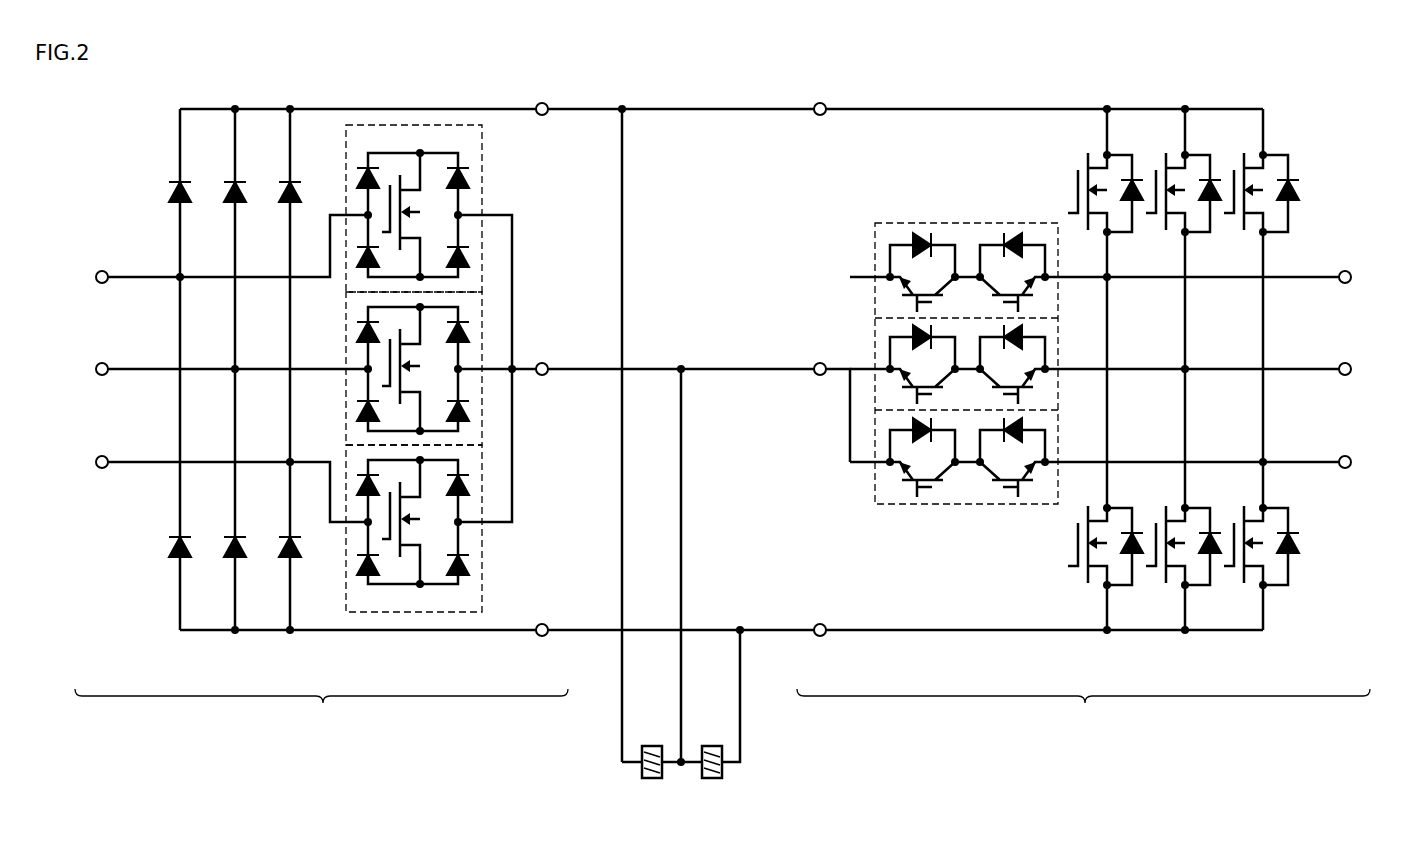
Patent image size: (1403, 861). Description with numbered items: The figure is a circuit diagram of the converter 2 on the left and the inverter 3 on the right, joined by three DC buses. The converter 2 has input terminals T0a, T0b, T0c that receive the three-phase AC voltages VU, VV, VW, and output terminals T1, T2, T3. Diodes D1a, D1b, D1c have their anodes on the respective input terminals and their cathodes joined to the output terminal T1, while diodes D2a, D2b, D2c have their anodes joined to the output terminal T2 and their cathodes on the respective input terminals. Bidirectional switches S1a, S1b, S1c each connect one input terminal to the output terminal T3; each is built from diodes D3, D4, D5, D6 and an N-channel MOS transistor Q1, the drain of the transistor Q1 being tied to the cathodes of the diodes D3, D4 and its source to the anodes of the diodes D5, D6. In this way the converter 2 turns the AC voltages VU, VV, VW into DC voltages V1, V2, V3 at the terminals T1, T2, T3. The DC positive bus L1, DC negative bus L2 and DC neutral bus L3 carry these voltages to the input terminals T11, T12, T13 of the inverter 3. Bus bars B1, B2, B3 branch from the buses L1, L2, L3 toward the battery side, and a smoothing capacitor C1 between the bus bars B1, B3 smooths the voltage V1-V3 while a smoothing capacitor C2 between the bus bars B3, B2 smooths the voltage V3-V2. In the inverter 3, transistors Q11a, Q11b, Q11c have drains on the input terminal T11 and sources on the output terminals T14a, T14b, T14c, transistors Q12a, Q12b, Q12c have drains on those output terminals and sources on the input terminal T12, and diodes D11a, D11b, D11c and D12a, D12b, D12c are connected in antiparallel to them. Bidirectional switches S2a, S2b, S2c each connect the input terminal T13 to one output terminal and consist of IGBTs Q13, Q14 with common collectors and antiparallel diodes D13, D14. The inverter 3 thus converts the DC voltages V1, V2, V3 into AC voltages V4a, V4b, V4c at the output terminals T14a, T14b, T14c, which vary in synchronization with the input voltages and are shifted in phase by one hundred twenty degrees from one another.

The converter 2 is at (321, 708).
The inverter 3 is at (1083, 708).
The input terminal T0a is at (102, 271).
The input terminal T0b is at (102, 363).
The input terminal T0c is at (102, 456).
The U-phase AC voltage VU is at (68, 278).
The V-phase AC voltage VV is at (67, 370).
The W-phase AC voltage VW is at (69, 463).
The diode D1a is at (169, 194).
The diode D1b is at (224, 194).
The diode D1c is at (279, 194).
The diode D2a is at (169, 549).
The diode D2b is at (224, 549).
The diode D2c is at (279, 549).
The bidirectional switch S1a is at (416, 325).
The bidirectional switch S1b is at (483, 333).
The bidirectional switch S1c is at (415, 612).
The diode D3 is at (362, 185).
The diode D4 is at (462, 182).
The diode D5 is at (362, 265).
The diode D6 is at (465, 255).
The N-channel MOS transistor Q1 is at (409, 211).
The output terminal T1 is at (542, 103).
The output terminal T2 is at (542, 636).
The output terminal T3 is at (542, 375).
The input terminal T11 is at (820, 103).
The input terminal T12 is at (820, 636).
The input terminal T13 is at (820, 375).
The DC voltage V1 is at (620, 94).
The DC voltage V2 is at (738, 609).
The DC voltage V3 is at (680, 352).
The DC positive bus L1 is at (663, 108).
The DC negative bus L2 is at (781, 629).
The DC neutral bus L3 is at (721, 368).
The bus bar B1 is at (623, 238).
The bus bar B2 is at (741, 727).
The bus bar B3 is at (682, 500).
The smoothing capacitor C1 is at (651, 785).
The smoothing capacitor C2 is at (711, 785).
The bidirectional switch S2a is at (932, 368).
The bidirectional switch S2b is at (875, 332).
The bidirectional switch S2c is at (875, 460).
The diode D13 is at (914, 240).
The diode D14 is at (1022, 240).
The transistor Q13 is at (936, 288).
The transistor Q14 is at (1000, 288).
The N-channel MOS transistor Q11a is at (1096, 160).
The N-channel MOS transistor Q11b is at (1174, 160).
The N-channel MOS transistor Q11c is at (1252, 160).
The diode D11a is at (1134, 205).
The diode D11b is at (1212, 205).
The diode D11c is at (1290, 205).
The N-channel MOS transistor Q12a is at (1098, 575).
The N-channel MOS transistor Q12b is at (1176, 575).
The N-channel MOS transistor Q12c is at (1254, 575).
The diode D12a is at (1136, 538).
The diode D12b is at (1214, 538).
The diode D12c is at (1292, 538).
The output terminal T14a is at (1345, 271).
The output terminal T14b is at (1345, 363).
The output terminal T14c is at (1345, 456).
The AC voltage V4a is at (1382, 278).
The AC voltage V4b is at (1382, 370).
The AC voltage V4c is at (1381, 463).